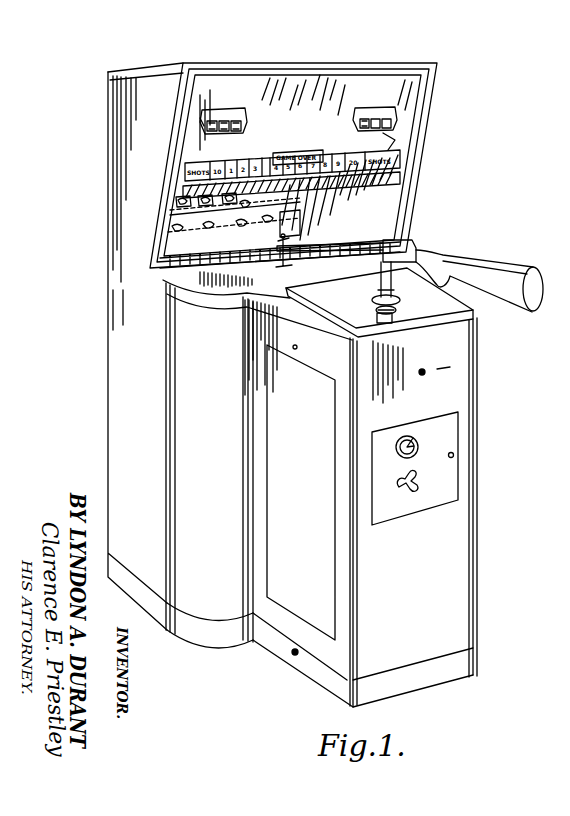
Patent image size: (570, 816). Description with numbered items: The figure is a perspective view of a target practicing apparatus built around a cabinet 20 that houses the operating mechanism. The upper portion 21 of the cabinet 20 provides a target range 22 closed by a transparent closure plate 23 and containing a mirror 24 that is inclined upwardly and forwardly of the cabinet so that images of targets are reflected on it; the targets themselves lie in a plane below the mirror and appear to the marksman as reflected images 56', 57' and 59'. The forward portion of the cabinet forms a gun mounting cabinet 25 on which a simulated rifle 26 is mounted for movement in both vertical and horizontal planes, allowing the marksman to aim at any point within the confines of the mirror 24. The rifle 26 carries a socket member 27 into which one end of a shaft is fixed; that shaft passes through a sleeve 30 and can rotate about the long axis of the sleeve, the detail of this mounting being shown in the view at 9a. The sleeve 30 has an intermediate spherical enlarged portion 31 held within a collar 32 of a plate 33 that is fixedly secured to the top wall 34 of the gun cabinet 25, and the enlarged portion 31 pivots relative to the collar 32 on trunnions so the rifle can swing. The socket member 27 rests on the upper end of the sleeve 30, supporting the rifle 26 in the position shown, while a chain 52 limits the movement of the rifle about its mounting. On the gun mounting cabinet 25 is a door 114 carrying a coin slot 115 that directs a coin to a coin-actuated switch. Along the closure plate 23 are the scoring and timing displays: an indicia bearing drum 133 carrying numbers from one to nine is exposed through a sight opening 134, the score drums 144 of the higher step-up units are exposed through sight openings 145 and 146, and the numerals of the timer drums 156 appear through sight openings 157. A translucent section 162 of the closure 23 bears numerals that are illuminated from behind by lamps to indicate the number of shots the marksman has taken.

The cabinet 20 is at (107, 392).
The upper portion of the cabinet 21 is at (117, 143).
The target range 22 is at (412, 193).
The transparent closure plate 23 is at (410, 112).
The mirror 24 is at (372, 219).
The gun mounting cabinet 25 is at (471, 392).
The simulated rifle 26 is at (478, 264).
The socket member 27 is at (381, 268).
The pivot bearings 9a is at (378, 311).
The sleeve 30 is at (340, 287).
The intermediate spherical enlarged portion 31 is at (400, 300).
The collar 32 is at (408, 320).
The plate 33 is at (296, 300).
The top wall 34 is at (396, 305).
The chain 52 is at (284, 268).
The reflected target image 56' is at (180, 239).
The reflected target image 57' is at (181, 232).
The reflected target image 59' is at (180, 208).
The door 114 is at (447, 500).
The coin slot 115 is at (418, 445).
The indicia bearing drum 133 is at (244, 108).
The sight opening 134 is at (250, 114).
The indicia bearing drum 144 is at (213, 108).
The sight opening 145 is at (227, 132).
The sight opening 146 is at (205, 130).
The timer drum 156 is at (378, 136).
The sight opening 157 is at (390, 108).
The translucent section 162 is at (390, 148).